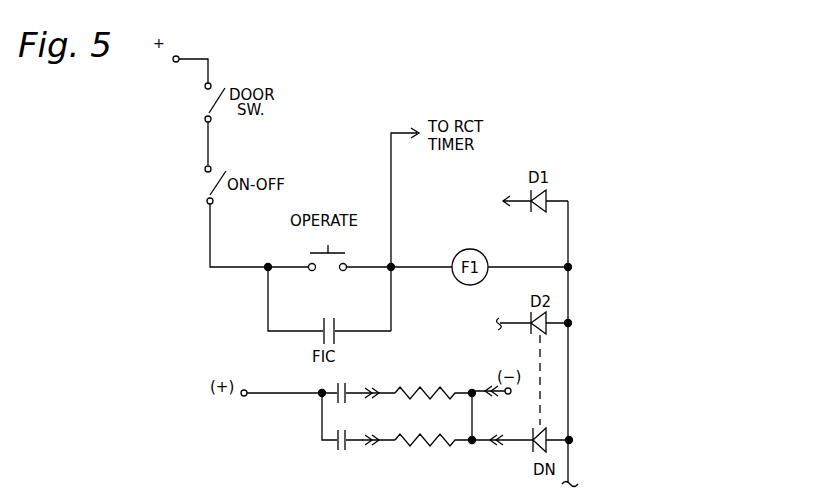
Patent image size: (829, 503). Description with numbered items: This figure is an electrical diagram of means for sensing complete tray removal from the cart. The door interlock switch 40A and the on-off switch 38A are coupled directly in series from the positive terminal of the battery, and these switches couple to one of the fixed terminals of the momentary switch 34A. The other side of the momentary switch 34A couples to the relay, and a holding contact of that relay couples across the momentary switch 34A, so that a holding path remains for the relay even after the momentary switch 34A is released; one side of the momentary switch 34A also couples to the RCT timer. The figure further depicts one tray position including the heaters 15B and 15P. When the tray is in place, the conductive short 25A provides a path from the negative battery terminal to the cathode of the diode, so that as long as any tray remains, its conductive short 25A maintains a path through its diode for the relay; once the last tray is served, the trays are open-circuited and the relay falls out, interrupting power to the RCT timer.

The door interlock switch 40A is at (213, 103).
The on-off switch 38A is at (214, 185).
The momentary switch 34A is at (333, 253).
The heater 15P is at (450, 389).
The heater 15B is at (449, 447).
The conductive short 25A is at (472, 430).